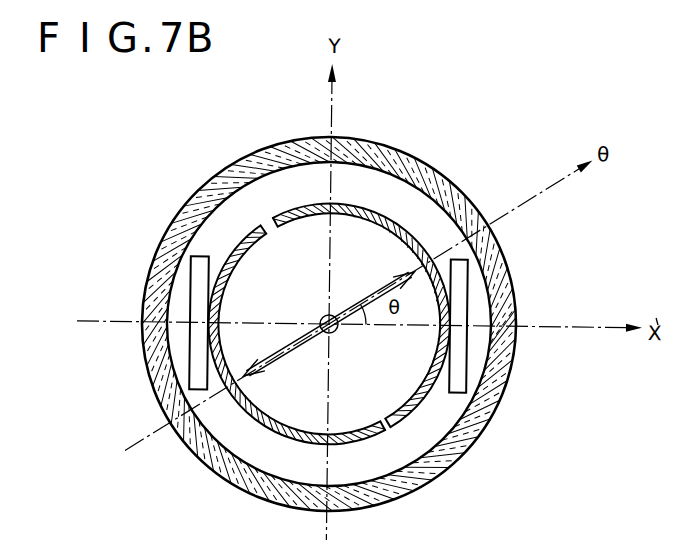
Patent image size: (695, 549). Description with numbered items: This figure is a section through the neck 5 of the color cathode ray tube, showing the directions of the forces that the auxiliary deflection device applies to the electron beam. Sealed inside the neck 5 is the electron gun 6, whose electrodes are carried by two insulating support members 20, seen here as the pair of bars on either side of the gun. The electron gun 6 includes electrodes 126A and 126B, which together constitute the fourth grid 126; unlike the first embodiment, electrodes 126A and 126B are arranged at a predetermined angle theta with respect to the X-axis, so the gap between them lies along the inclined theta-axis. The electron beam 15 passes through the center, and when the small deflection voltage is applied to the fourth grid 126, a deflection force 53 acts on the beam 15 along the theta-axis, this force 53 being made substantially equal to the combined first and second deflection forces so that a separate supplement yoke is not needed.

The neck 5 is at (384, 154).
The electron gun 6 is at (296, 242).
The fourth grid 126 is at (351, 302).
The electrode 126A is at (290, 431).
The electrode 126B is at (434, 372).
The electron beam 15 is at (323, 317).
The force 53 is at (277, 351).
The insulating support member 20 is at (190, 354).